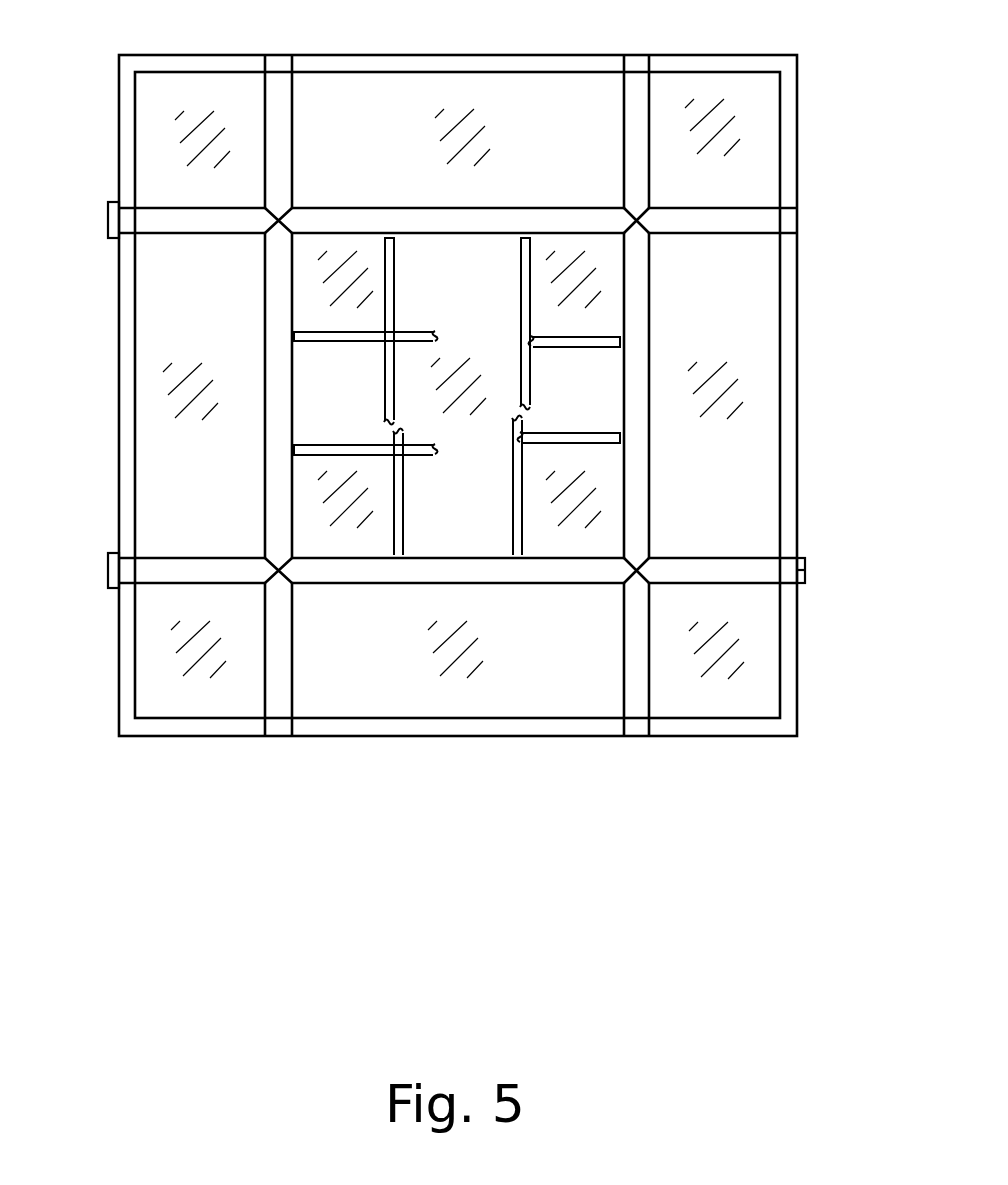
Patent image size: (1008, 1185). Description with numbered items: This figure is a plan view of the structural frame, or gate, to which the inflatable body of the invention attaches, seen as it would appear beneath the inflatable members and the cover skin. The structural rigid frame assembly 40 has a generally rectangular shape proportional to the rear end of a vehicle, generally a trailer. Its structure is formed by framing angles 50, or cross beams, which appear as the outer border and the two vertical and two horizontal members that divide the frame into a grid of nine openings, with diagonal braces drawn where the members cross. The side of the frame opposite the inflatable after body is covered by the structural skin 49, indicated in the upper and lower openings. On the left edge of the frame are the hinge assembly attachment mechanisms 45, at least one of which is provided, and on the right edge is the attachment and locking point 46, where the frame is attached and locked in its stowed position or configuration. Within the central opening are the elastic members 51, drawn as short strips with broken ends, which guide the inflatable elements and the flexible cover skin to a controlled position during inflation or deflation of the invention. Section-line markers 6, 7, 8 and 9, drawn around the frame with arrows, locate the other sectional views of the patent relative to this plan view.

The structural rigid frame assembly 40 is at (240, 55).
The hinge assembly attachment mechanism 45 is at (108, 220).
The attachment and locking point 46 is at (806, 570).
The structural skin 49 is at (373, 95).
The framing angles 50 is at (780, 690).
The elastic members 51 is at (407, 331).
The section line 6- 6 is at (815, 170).
The section line 7- 7 is at (815, 365).
The section line 8- 8 is at (866, 646).
The section line 9- 9 is at (49, 646).